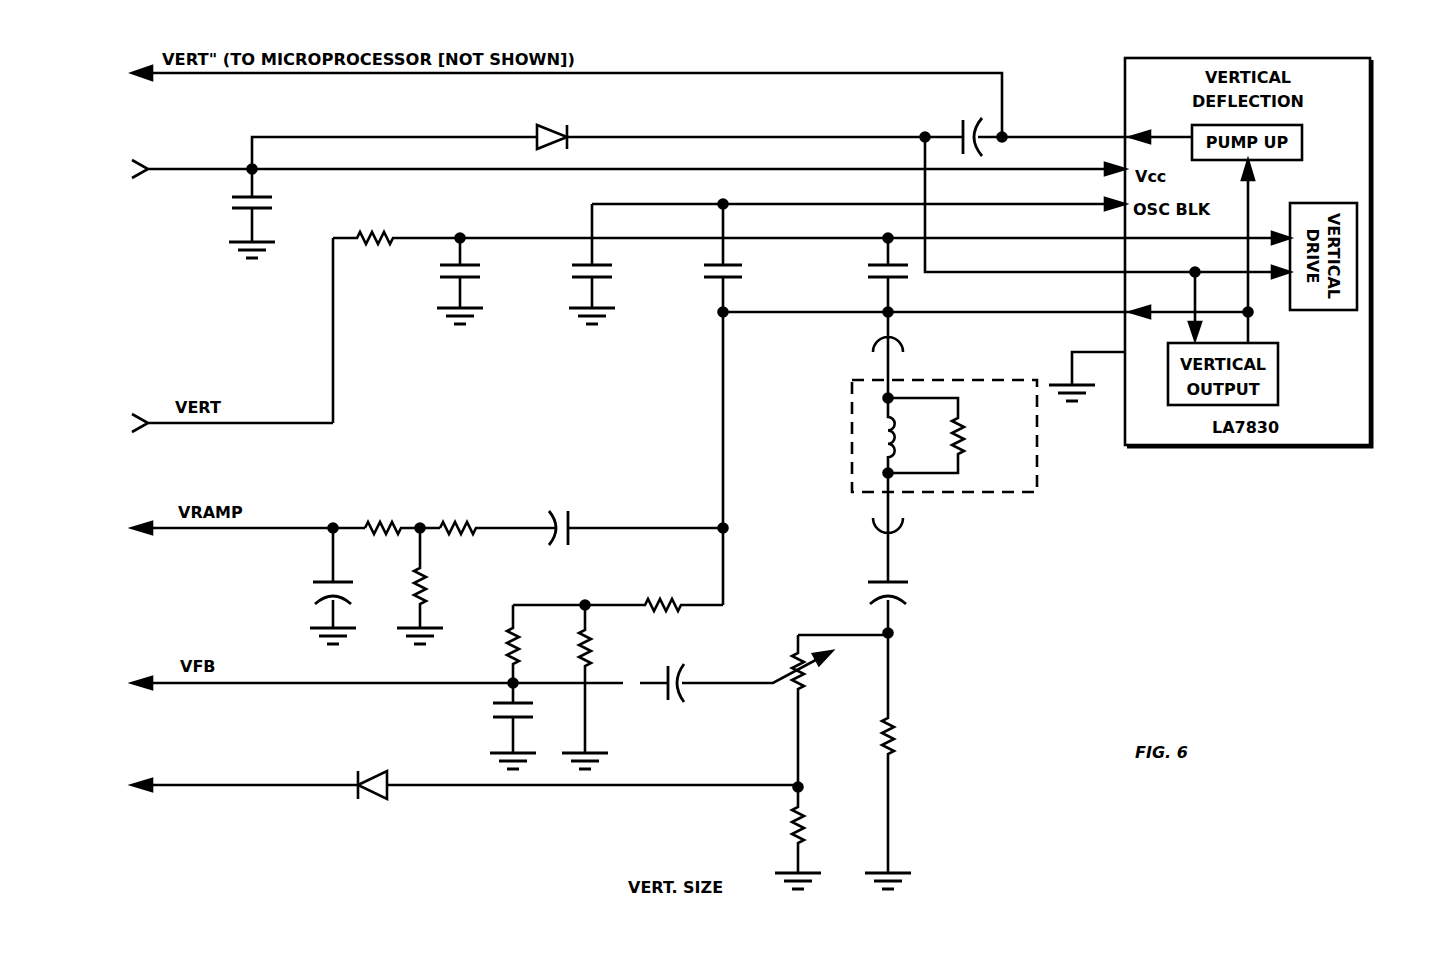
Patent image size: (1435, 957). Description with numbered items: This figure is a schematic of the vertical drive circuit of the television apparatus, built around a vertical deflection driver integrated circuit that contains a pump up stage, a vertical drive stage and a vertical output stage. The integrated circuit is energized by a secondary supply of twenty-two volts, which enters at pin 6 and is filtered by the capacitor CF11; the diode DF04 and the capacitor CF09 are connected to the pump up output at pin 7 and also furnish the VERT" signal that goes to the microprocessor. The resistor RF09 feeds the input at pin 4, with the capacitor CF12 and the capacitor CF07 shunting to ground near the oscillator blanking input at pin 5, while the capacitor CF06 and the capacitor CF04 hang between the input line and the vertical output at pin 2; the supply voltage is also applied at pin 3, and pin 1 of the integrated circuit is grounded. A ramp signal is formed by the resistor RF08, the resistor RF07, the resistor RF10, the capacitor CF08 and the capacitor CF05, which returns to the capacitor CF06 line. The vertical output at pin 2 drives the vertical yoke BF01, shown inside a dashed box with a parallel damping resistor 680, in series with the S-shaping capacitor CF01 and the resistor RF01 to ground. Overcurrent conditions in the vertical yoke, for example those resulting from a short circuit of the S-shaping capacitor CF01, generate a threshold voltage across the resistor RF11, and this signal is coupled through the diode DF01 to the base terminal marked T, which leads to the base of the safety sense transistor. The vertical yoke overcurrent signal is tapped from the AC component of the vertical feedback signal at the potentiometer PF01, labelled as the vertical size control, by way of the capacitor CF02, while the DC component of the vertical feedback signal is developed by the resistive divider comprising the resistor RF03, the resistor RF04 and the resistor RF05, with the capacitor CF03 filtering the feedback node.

The capacitor CF11 100n CF11 is at (231, 213).
The diode DF04 BA157 DF04 is at (588, 128).
The resistor RF09 2.2K RF09 is at (396, 302).
The capacitor CF12 33n CF12 is at (437, 279).
The capacitor CF07 1n CF07 is at (567, 264).
The capacitor CF06 56p CF06 is at (698, 403).
The capacitor CF04 220p CF04 is at (861, 285).
The capacitor CF09 100u 35V CF09 is at (932, 121).
The capacitor CF05 0.47u CF05 is at (629, 501).
The capacitor CF08 1u CF08 is at (313, 586).
The resistor RF08 39K RF08 is at (399, 503).
The resistor RF07 11K RF07 is at (495, 503).
The resistor RF10 6.2K RF10 is at (440, 586).
The resistor RF05 is at (618, 580).
The resistor RF03 is at (487, 654).
The resistor RF04 is at (605, 687).
The capacitor CF03 22n CF03 is at (490, 724).
The capacitor CF02 4.7u CF02 is at (736, 704).
The potentiometer PF01 is at (842, 708).
The resistor RF11 is at (780, 836).
The S-shaping capacitor CF01 is at (917, 596).
The resistor RF01 2.7 RF01 is at (911, 761).
The vertical yoke BF01 is at (1002, 458).
The yoke damping resistor 680 is at (947, 435).
The diode DF01 is at (575, 813).
The base test point TP08 terminal T is at (147, 792).
The LA7830 pin 1 ground 1 is at (1087, 365).
The LA7830 pin 2 vertical output 2 is at (988, 303).
The LA7830 pin 3 Vcc 3 is at (1107, 238).
The LA7830 pin 4 input 4 is at (875, 230).
The LA7830 pin 5 OSC BLK 5 is at (858, 197).
The LA7830 pin 6 Vcc 6 is at (628, 159).
The LA7830 pin 7 pump up output 7 is at (1097, 117).